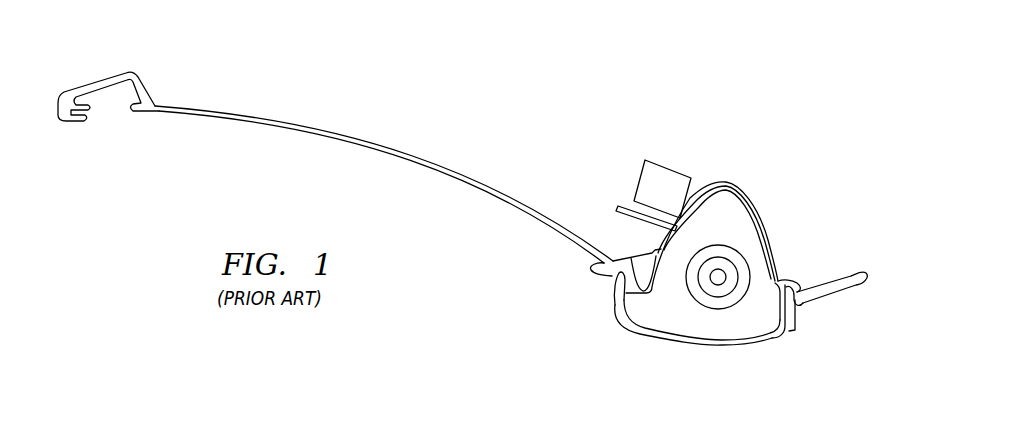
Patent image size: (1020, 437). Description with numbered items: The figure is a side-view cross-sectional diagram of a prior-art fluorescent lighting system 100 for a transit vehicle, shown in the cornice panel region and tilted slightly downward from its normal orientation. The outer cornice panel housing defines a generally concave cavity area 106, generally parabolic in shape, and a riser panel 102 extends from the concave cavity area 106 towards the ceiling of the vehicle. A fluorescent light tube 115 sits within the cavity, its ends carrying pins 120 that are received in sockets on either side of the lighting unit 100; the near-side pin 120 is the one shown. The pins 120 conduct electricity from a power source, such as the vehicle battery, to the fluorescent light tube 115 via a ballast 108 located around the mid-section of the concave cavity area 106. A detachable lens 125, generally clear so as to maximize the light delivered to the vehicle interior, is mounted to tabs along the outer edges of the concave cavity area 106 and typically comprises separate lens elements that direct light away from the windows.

The fluorescent lighting system 100 is at (460, 256).
The riser panel 102 is at (421, 155).
The concave cavity area 106 is at (740, 192).
The ballast 108 is at (672, 162).
The fluorescent light tube 115 is at (743, 258).
The pin 120 is at (725, 288).
The detachable lens 125 is at (672, 342).